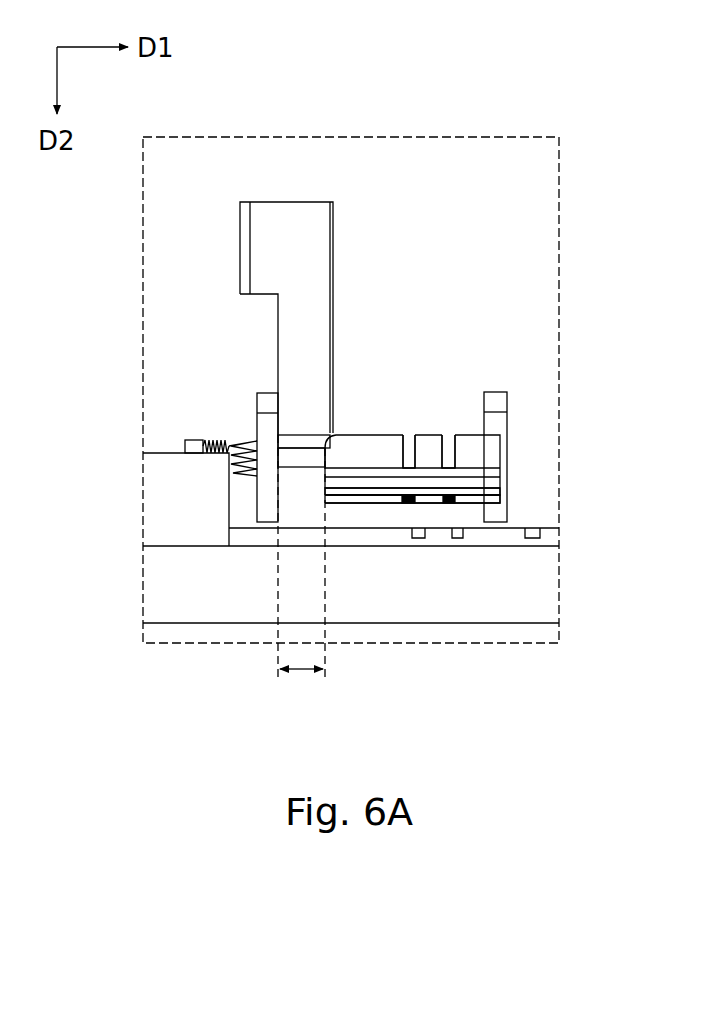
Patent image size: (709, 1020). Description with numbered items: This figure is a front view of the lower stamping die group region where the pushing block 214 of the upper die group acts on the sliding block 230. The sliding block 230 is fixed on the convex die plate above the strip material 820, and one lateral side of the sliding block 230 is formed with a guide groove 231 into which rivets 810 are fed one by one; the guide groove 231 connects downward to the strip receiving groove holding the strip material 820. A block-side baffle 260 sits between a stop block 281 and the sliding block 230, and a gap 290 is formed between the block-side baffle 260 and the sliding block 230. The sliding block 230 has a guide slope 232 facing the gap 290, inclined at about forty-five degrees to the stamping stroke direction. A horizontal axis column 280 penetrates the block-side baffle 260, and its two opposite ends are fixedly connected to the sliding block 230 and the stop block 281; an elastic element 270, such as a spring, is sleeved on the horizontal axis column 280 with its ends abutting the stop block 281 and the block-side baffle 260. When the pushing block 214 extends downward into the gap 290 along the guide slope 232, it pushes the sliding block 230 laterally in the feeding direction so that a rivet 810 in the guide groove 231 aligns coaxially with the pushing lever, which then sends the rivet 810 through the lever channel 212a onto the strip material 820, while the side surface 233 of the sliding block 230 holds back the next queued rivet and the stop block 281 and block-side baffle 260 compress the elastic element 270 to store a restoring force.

The pushing block 214 is at (258, 223).
The guide slope 232 is at (327, 432).
The block-side baffle 260 is at (267, 395).
The elastic element 270 is at (222, 440).
The stop block 281 is at (195, 440).
The horizontal axis column 280 is at (295, 462).
The lever channel 212a is at (415, 430).
The sliding block 230 is at (488, 456).
The guide groove 231 is at (462, 498).
The side surface 233 is at (358, 498).
The rivet 810 is at (405, 504).
The strip material 820 is at (550, 538).
The gap 290 is at (300, 670).